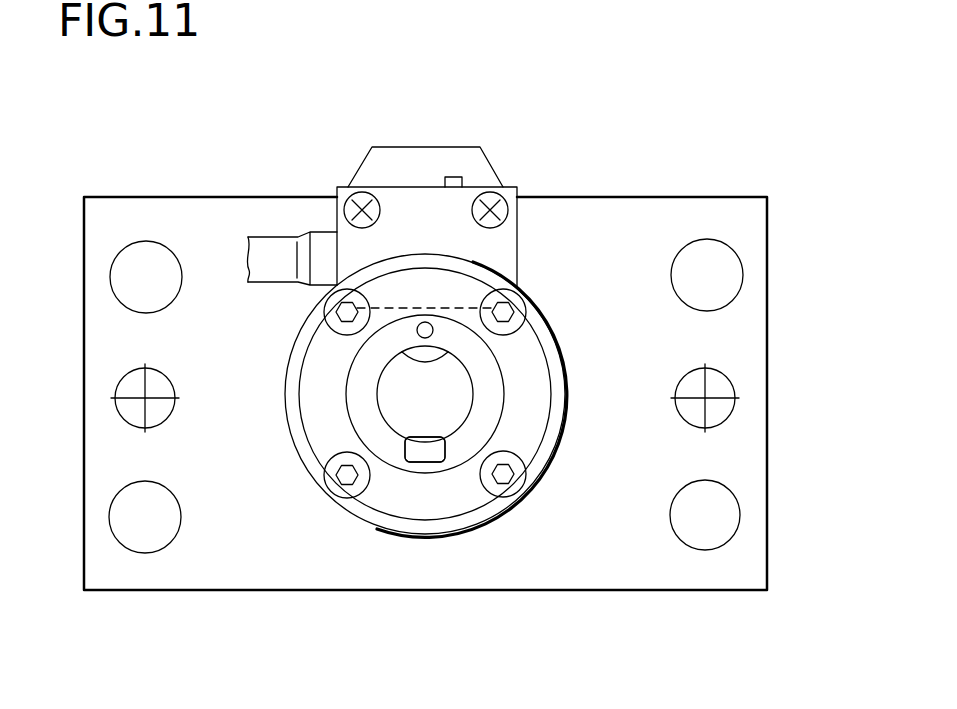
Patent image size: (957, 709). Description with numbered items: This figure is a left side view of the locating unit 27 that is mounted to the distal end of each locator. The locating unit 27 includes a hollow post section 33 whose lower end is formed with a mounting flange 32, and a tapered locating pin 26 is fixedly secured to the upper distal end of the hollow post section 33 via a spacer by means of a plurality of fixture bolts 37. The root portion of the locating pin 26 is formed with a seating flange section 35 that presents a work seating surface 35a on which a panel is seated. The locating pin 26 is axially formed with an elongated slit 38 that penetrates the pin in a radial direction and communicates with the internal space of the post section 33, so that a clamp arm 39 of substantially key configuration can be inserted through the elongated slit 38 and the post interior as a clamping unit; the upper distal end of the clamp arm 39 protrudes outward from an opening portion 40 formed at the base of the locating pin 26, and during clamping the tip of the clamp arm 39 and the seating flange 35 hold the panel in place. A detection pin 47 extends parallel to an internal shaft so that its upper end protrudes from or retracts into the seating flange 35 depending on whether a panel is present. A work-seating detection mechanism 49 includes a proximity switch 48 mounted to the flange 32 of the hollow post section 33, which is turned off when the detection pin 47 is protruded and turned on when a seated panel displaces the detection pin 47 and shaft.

The locating unit 27 is at (608, 178).
The mounting flange 32 is at (686, 197).
The proximity switch 48 is at (418, 193).
The work-seating detection mechanism 49 is at (453, 182).
The detection pin 47 is at (426, 321).
The elongated slit 38 is at (430, 352).
The fixture bolts 37 is at (328, 314).
The locating pin 26 is at (458, 375).
The work seating surface 35a is at (495, 393).
The seating flange section 35 is at (494, 528).
The hollow post section 33 is at (358, 519).
The opening portion 40 is at (430, 462).
The clamp arm 39 is at (425, 438).